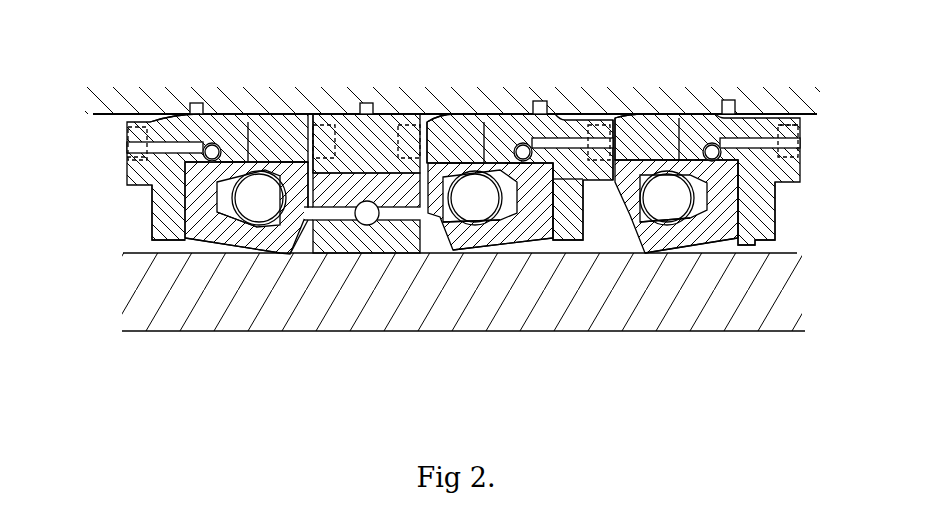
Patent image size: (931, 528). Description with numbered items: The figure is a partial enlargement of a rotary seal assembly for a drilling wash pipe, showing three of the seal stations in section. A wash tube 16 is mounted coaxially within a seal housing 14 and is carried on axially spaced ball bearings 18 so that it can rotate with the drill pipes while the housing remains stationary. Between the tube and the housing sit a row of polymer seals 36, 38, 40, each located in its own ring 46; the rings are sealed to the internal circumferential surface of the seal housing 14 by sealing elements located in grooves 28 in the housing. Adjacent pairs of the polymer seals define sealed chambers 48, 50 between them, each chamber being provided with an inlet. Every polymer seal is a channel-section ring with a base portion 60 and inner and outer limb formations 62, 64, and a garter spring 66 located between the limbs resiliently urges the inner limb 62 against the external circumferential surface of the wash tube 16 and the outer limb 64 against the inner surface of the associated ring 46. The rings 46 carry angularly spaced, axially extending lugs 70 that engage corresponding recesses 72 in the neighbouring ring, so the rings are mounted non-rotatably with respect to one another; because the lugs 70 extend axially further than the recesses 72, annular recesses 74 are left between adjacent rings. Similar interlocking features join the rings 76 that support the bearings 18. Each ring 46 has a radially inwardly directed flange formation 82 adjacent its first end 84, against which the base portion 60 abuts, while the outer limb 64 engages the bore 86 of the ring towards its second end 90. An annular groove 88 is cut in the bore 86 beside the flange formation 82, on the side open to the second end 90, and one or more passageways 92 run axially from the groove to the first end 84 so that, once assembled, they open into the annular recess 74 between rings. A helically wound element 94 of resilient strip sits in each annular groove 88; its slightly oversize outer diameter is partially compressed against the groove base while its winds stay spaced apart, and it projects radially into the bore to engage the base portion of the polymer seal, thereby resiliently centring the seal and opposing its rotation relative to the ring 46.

The seal housing 14 is at (100, 103).
The wash tube 16 is at (787, 313).
The ball bearings 18 is at (320, 253).
The grooves 28 is at (192, 101).
The polymer seal 36 is at (212, 248).
The polymer seal 38 is at (513, 238).
The polymer seal 40 is at (667, 250).
The rings 46 is at (160, 122).
The sealed chamber 48 is at (428, 256).
The sealed chamber 50 is at (614, 248).
The base portion 60 is at (195, 212).
The inner limb formation 62 is at (244, 247).
The outer limb formation 64 is at (293, 160).
The garter spring 66 is at (258, 227).
The lugs 70 is at (319, 93).
The recesses 72 is at (127, 158).
The annular recesses 74 is at (312, 128).
The rings 76 is at (350, 130).
The flange formation 82 is at (152, 216).
The first end 84 is at (127, 178).
The bore 86 is at (247, 158).
The annular groove 88 is at (235, 135).
The second end 90 is at (262, 253).
The passageways 92 is at (127, 143).
The helically wound element 94 is at (221, 140).